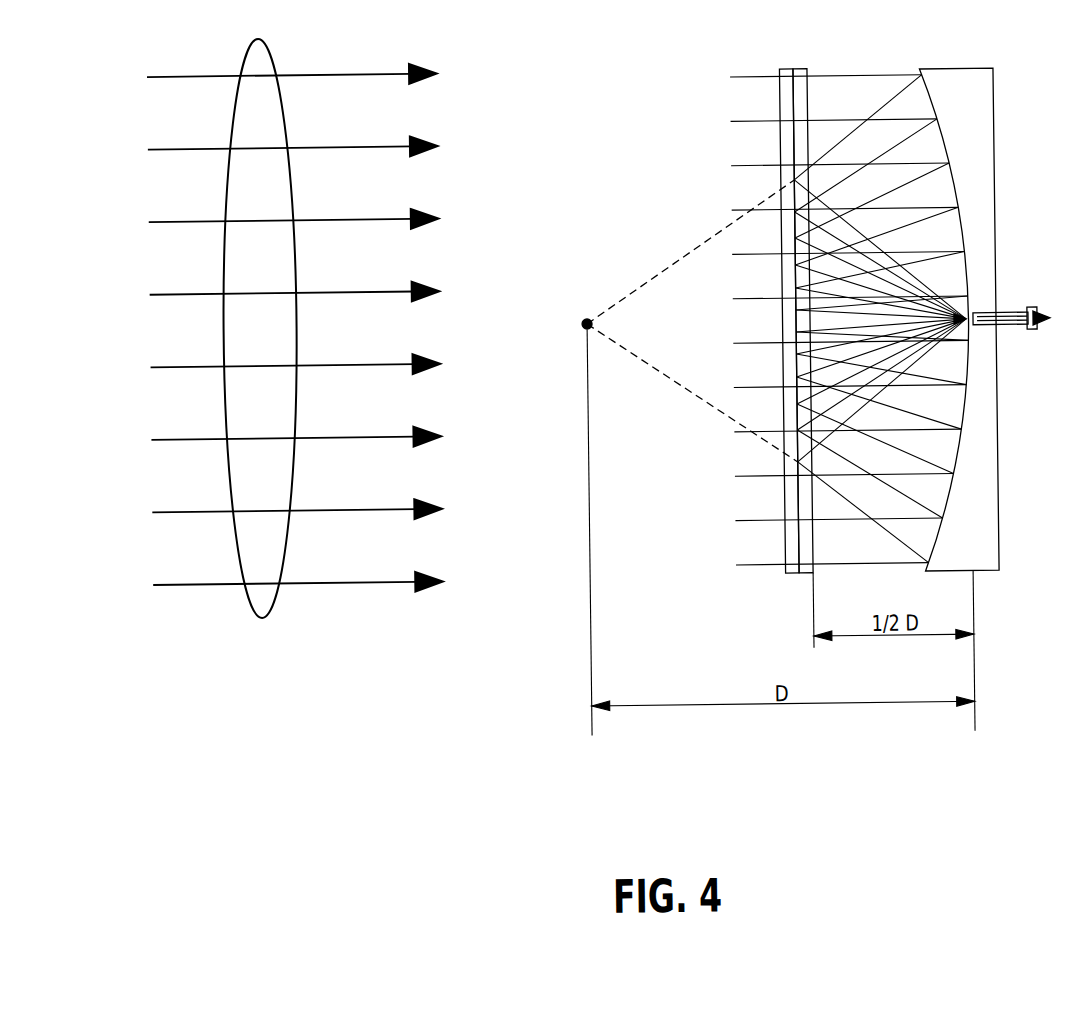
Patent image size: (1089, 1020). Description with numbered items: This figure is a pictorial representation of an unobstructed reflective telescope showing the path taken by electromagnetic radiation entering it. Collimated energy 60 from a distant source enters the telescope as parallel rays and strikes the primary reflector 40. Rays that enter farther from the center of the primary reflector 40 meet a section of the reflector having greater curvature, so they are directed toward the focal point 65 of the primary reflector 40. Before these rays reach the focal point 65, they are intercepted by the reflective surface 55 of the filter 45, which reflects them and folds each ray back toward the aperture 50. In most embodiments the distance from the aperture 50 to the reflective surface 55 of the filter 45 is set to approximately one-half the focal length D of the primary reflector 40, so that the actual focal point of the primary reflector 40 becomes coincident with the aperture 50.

The primary reflector 40 is at (996, 118).
The filter 45 is at (810, 73).
The aperture 50 is at (977, 323).
The reflective surface 55 is at (789, 73).
The collimated energy 60 is at (261, 614).
The focal point 65 is at (581, 324).